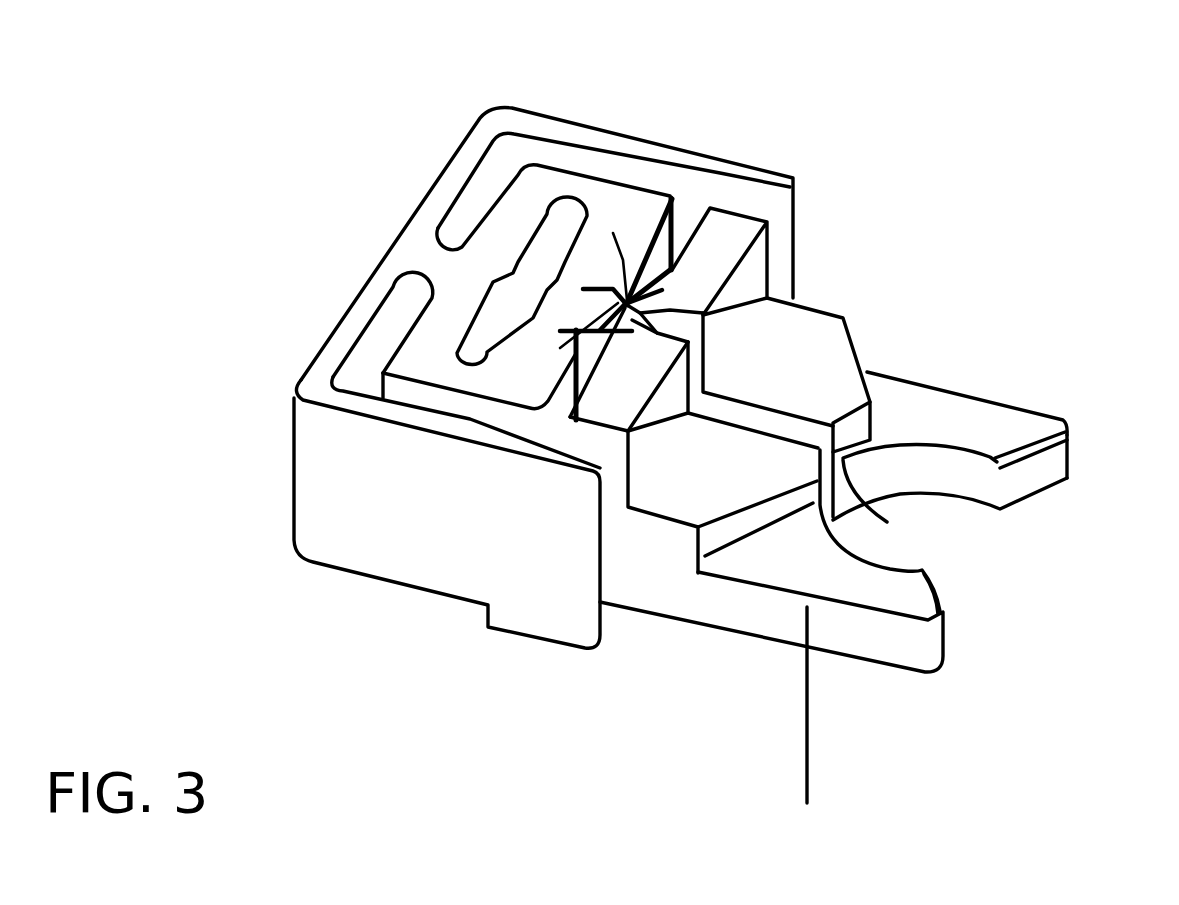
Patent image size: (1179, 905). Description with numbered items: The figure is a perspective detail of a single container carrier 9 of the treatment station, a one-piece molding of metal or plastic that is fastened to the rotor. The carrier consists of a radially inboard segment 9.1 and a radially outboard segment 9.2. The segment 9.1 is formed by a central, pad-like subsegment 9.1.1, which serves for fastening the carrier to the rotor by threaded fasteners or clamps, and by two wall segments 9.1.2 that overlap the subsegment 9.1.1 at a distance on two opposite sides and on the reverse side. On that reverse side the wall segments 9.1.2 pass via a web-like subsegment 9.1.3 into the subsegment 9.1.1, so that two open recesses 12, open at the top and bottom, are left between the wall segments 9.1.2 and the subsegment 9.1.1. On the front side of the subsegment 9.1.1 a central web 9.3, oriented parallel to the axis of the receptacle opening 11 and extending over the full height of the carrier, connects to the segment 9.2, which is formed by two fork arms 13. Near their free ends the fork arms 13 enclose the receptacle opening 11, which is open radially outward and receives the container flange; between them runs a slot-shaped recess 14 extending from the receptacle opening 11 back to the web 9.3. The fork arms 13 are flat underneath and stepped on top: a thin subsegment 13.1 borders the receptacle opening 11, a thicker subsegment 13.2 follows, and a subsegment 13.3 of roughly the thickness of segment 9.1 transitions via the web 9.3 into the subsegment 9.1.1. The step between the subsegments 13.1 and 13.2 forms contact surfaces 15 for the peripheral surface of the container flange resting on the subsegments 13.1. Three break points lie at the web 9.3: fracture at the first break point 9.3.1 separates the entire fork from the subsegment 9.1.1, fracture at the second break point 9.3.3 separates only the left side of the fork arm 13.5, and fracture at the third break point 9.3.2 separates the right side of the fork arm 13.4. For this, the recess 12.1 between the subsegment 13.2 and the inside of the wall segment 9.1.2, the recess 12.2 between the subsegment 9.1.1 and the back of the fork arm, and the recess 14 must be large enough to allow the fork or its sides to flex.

The container carrier 9 is at (703, 108).
The radially inboard segment 9.1 is at (451, 630).
The central pad-like subsegment 9.1.1 is at (535, 193).
The wall segments 9.1.2 is at (700, 163).
The web-like subsegment 9.1.3 is at (423, 260).
The radially outboard segment 9.2 is at (867, 702).
The web 9.3 is at (662, 292).
The first break point 9.3.1 is at (590, 306).
The third break point 9.3.2 is at (559, 337).
The second break point 9.3.3 is at (622, 254).
The receptacle opening 11 is at (965, 545).
The open recesses 12 is at (623, 167).
The recess between fork-arm sub-segment and wall segment 12.1 is at (580, 443).
The recess between sub-segment 9.1.1 and fork-arm back 12.2 is at (545, 413).
The fork arms 13 is at (1000, 376).
The thin subsegment of fork arm 13.1 is at (1007, 417).
The intermediate subsegment of fork arm 13.2 is at (828, 363).
The thick subsegment of fork arm 13.3 is at (750, 292).
The right side of the fork arm 13.4 is at (819, 725).
The left side of the fork arm 13.5 is at (943, 417).
The slot-shaped recess 14 is at (867, 372).
The contact surfaces 15 is at (855, 432).